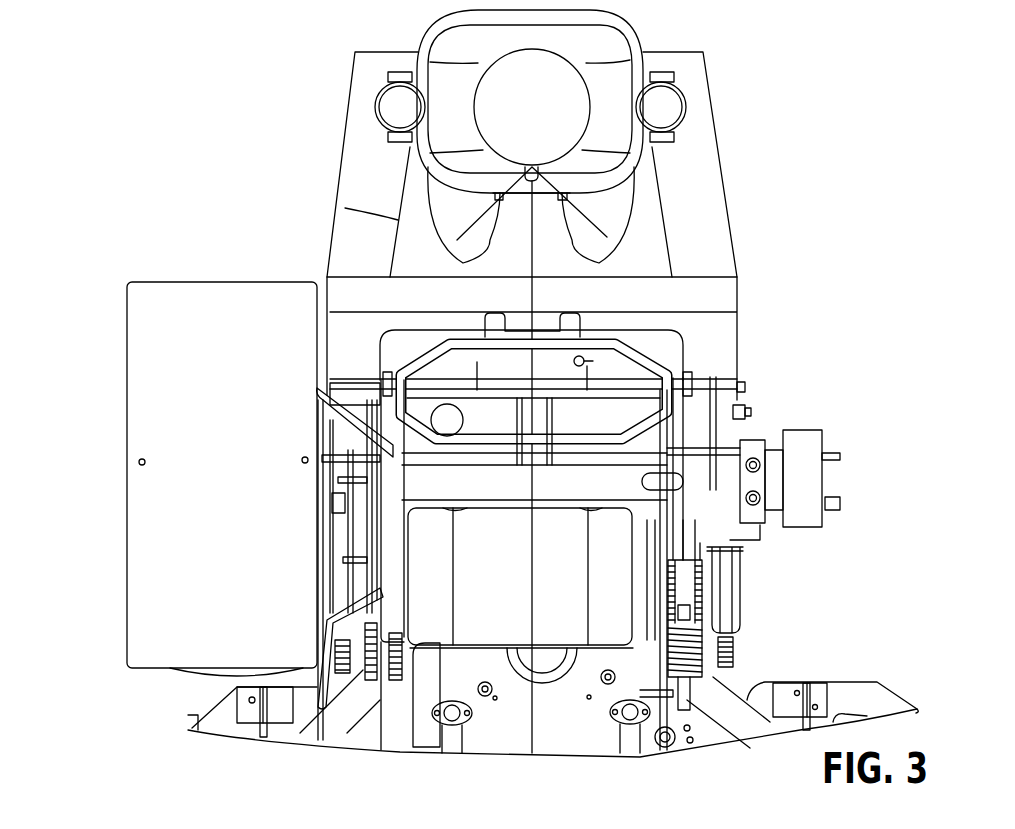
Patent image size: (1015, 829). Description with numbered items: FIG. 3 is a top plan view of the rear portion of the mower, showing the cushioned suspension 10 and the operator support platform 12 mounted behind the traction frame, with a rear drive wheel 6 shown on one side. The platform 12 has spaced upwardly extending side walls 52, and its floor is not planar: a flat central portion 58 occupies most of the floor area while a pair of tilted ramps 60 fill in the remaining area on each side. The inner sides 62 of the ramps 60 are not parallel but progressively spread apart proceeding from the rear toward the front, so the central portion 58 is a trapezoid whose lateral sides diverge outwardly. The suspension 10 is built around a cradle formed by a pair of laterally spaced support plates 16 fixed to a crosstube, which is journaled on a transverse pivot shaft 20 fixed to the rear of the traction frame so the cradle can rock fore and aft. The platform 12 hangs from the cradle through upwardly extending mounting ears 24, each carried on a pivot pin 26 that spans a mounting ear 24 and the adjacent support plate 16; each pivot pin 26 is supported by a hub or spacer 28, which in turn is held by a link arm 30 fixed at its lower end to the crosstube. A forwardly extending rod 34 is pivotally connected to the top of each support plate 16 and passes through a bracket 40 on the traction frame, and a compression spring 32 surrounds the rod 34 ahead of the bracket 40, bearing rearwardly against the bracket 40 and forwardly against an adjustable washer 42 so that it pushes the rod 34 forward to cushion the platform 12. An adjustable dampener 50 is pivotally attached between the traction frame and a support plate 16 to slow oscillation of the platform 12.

The rear drive wheel 6 is at (205, 327).
The cushioned suspension 10 is at (763, 609).
The operator support platform 12 is at (684, 200).
The support plate 16 is at (680, 373).
The pivot shaft 20 is at (747, 418).
The mounting ear 24 is at (740, 323).
The pivot pin 26 is at (742, 390).
The hub or spacer 28 is at (365, 387).
The link arm 30 is at (353, 382).
The compression spring 32 is at (693, 653).
The rod 34 is at (707, 733).
The bracket 40 is at (700, 543).
The washer 42 is at (703, 682).
The dampener 50 is at (687, 568).
The side wall 52 is at (710, 75).
The flat central portion 58 is at (640, 255).
The tilted ramp 60 is at (378, 170).
The inner side of ramp 62 is at (398, 220).